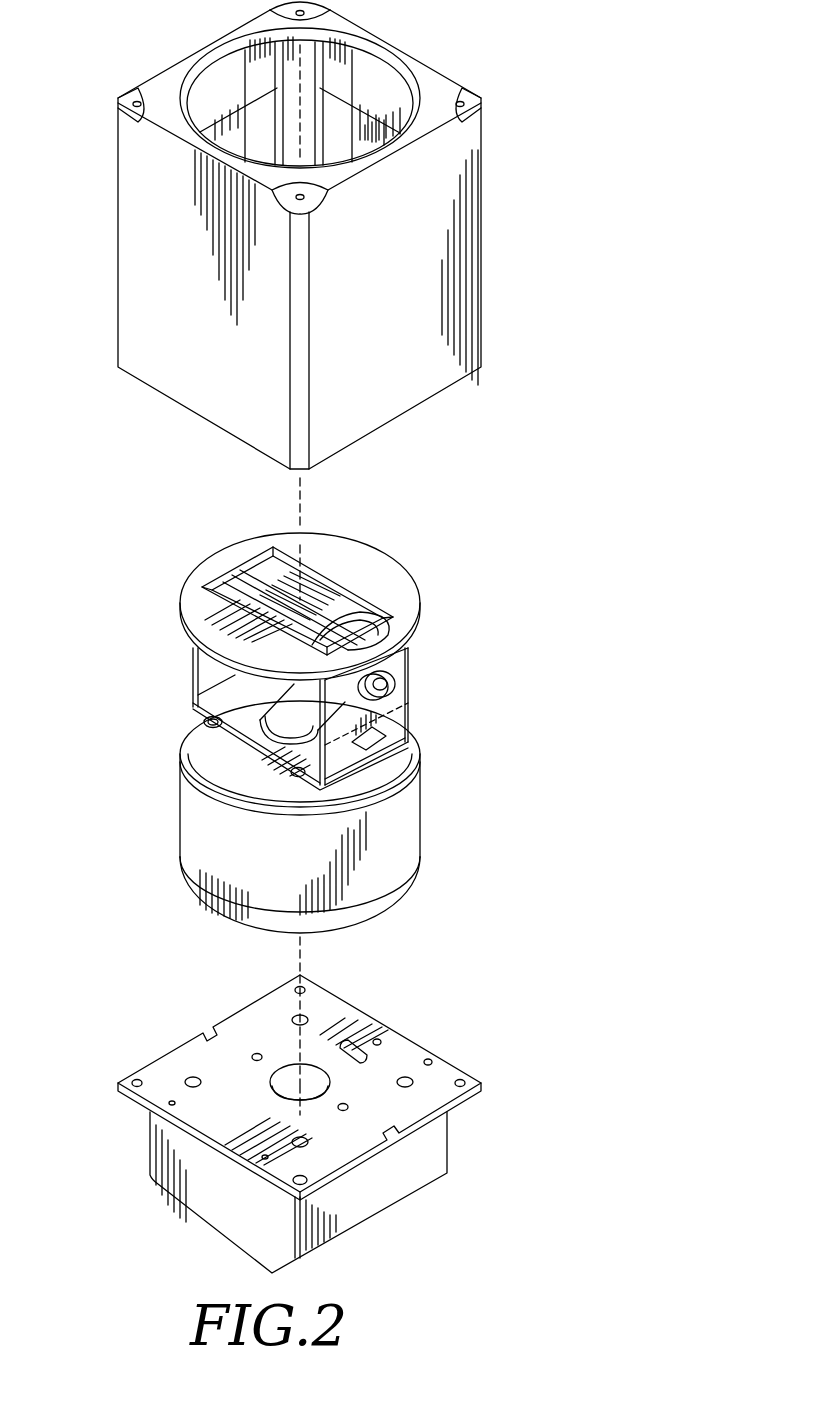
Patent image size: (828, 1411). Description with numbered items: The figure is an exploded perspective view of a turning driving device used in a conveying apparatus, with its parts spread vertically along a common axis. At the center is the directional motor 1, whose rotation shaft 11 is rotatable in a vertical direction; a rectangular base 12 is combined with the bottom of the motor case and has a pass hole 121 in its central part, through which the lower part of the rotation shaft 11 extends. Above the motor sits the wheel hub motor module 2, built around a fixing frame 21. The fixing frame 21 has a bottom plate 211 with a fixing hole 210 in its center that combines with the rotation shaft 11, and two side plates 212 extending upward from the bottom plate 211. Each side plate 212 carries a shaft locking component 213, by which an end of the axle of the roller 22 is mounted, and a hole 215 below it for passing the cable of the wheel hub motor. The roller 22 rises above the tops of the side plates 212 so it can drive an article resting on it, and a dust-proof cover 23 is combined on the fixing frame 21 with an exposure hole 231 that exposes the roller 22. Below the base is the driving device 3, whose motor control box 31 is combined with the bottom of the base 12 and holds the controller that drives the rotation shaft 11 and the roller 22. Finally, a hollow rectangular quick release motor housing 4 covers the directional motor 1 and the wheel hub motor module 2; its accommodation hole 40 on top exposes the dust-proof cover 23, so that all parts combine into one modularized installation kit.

The directional motor 1 is at (190, 836).
The rotation shaft 11 is at (262, 718).
The rectangular base 12 is at (400, 1057).
The pass hole 121 is at (282, 1070).
The wheel hub motor module 2 is at (182, 613).
The fixing frame 21 is at (408, 683).
The fixing hole 210 is at (192, 706).
The bottom plate 211 is at (222, 726).
The side plate 212 is at (337, 768).
The shaft locking component 213 is at (388, 678).
The hole 215 is at (378, 742).
The roller 22 is at (266, 580).
The dust-proof cover 23 is at (400, 600).
The exposure hole 231 is at (332, 578).
The driving device 3 is at (152, 1191).
The motor control box 31 is at (433, 1158).
The quick release motor housing 4 is at (106, 220).
The accommodation hole 40 is at (400, 66).